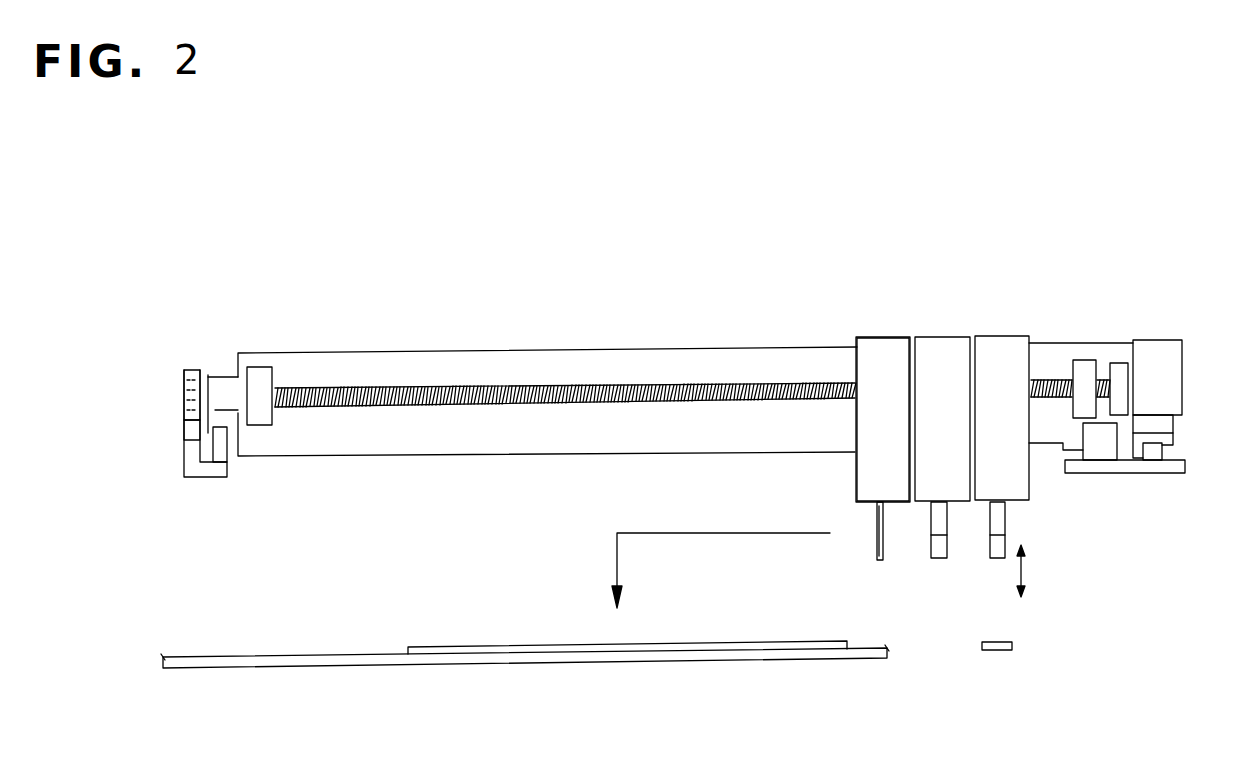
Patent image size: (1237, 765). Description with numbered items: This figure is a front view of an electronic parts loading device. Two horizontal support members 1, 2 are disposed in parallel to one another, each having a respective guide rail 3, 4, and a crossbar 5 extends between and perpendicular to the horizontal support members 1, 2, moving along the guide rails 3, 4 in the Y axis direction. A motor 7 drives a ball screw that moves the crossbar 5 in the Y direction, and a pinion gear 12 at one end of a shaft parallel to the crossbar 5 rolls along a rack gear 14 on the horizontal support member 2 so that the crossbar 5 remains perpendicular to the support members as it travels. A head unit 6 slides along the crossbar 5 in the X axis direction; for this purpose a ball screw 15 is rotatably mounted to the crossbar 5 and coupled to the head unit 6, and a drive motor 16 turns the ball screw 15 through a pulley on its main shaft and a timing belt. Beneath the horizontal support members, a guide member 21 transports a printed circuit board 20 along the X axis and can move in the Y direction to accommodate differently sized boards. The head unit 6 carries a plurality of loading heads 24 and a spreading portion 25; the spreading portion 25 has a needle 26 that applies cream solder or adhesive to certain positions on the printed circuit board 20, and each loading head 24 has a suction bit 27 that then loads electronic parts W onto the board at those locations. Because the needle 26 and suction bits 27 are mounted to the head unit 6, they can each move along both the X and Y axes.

The horizontal support member 1 is at (190, 478).
The horizontal support member 2 is at (1155, 467).
The guide rail 3 is at (235, 430).
The guide rail 4 is at (1160, 448).
The crossbar 5 is at (543, 362).
The head unit 6 is at (874, 338).
The motor 7 is at (1107, 447).
The pinion gear 12 is at (185, 380).
The rack gear 14 is at (182, 436).
The ball screw 15 is at (665, 386).
The drive motor 16 is at (1157, 352).
The printed circuit board 20 is at (492, 648).
The guide member 21 is at (326, 665).
The loading head 24 is at (945, 345).
The spreading portion 25 is at (870, 477).
The needle 26 is at (878, 548).
The suction bit 27 is at (988, 548).
The electronic parts W is at (985, 648).